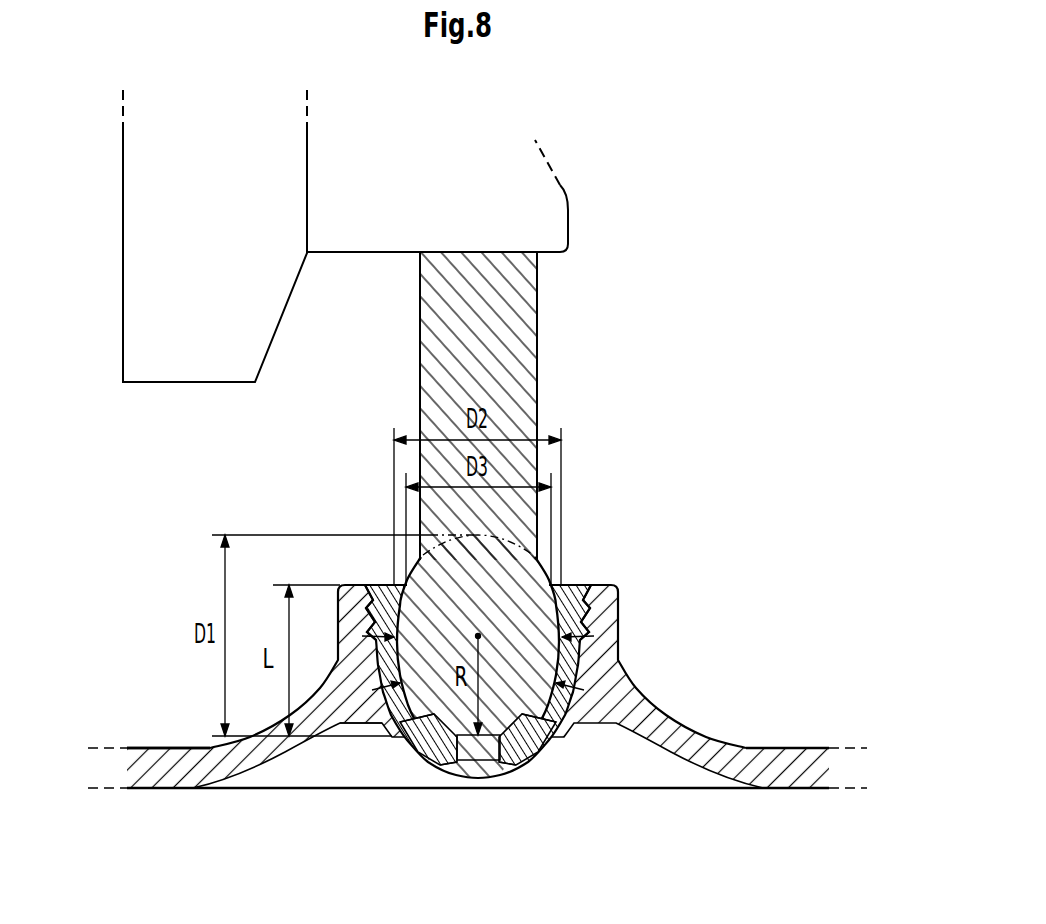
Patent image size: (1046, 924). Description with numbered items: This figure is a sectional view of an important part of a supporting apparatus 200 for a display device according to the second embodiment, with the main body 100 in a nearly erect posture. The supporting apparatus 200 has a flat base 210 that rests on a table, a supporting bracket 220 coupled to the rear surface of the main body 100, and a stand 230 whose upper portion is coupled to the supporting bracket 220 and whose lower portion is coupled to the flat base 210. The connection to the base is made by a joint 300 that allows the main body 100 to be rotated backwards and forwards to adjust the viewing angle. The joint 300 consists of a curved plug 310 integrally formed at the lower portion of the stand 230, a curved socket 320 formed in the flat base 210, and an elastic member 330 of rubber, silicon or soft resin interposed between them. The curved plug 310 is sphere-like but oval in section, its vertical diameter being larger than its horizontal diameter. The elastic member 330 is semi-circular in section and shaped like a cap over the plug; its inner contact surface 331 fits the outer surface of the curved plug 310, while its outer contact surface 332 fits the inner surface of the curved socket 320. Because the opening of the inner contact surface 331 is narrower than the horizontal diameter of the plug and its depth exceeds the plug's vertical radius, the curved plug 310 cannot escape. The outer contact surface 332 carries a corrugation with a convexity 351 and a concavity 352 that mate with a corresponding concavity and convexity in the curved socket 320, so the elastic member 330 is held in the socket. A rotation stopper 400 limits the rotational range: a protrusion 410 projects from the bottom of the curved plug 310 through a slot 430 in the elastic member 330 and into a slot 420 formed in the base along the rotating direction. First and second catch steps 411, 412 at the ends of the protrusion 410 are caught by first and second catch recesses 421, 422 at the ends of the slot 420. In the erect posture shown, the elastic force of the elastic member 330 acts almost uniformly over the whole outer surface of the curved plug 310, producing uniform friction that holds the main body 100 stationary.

The main body 100 is at (155, 266).
The supporting apparatus 200 is at (478, 705).
The flat base 210 is at (150, 750).
The supporting bracket 220 is at (550, 213).
The stand 230 is at (512, 330).
The joint 300 is at (478, 650).
The curved plug 310 is at (593, 636).
The curved socket 320 is at (360, 737).
The elastic member 330 is at (530, 674).
The inner contact surface 331 is at (560, 727).
The outer contact surface 332 is at (577, 690).
The convexity 351 is at (588, 604).
The concavity 352 is at (578, 590).
The rotation stopper 400 is at (432, 807).
The protrusion 410 is at (477, 760).
The first catch step 411 is at (447, 765).
The second catch step 412 is at (505, 750).
The slot 420 is at (398, 788).
The first catch recess 421 is at (417, 753).
The second catch recess 422 is at (543, 753).
The slot 430 is at (545, 791).